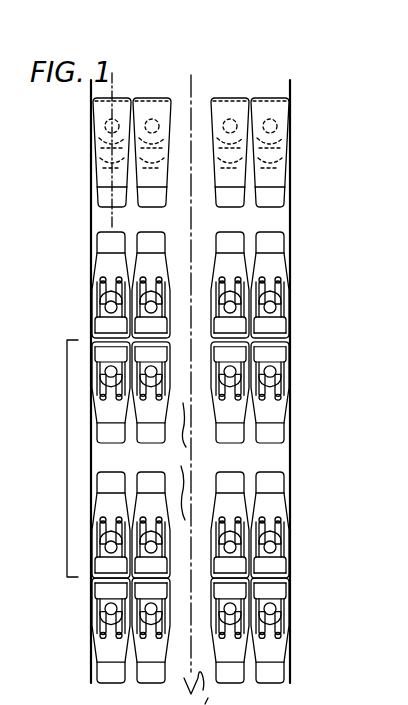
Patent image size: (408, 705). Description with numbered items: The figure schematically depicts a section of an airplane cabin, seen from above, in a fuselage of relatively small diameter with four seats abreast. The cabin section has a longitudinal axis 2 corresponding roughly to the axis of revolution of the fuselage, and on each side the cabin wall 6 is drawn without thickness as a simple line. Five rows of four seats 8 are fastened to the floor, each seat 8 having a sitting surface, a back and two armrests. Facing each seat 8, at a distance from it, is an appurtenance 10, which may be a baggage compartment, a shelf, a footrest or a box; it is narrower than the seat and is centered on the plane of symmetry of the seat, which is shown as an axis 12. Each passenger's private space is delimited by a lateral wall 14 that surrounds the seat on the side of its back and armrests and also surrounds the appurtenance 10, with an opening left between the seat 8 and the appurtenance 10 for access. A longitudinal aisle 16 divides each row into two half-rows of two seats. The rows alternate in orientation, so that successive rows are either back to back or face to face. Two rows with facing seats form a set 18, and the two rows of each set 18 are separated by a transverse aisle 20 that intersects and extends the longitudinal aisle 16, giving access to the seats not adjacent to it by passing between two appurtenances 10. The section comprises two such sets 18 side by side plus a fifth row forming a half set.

The longitudinal axis 2 is at (193, 92).
The cabin wall 6 is at (91, 205).
The seat 8 is at (110, 94).
The appurtenance 10 is at (118, 200).
The axis 12 is at (112, 167).
The lateral wall 14 is at (165, 105).
The longitudinal aisle 16 is at (183, 448).
The set 18 is at (67, 452).
The transverse aisle 20 is at (250, 457).